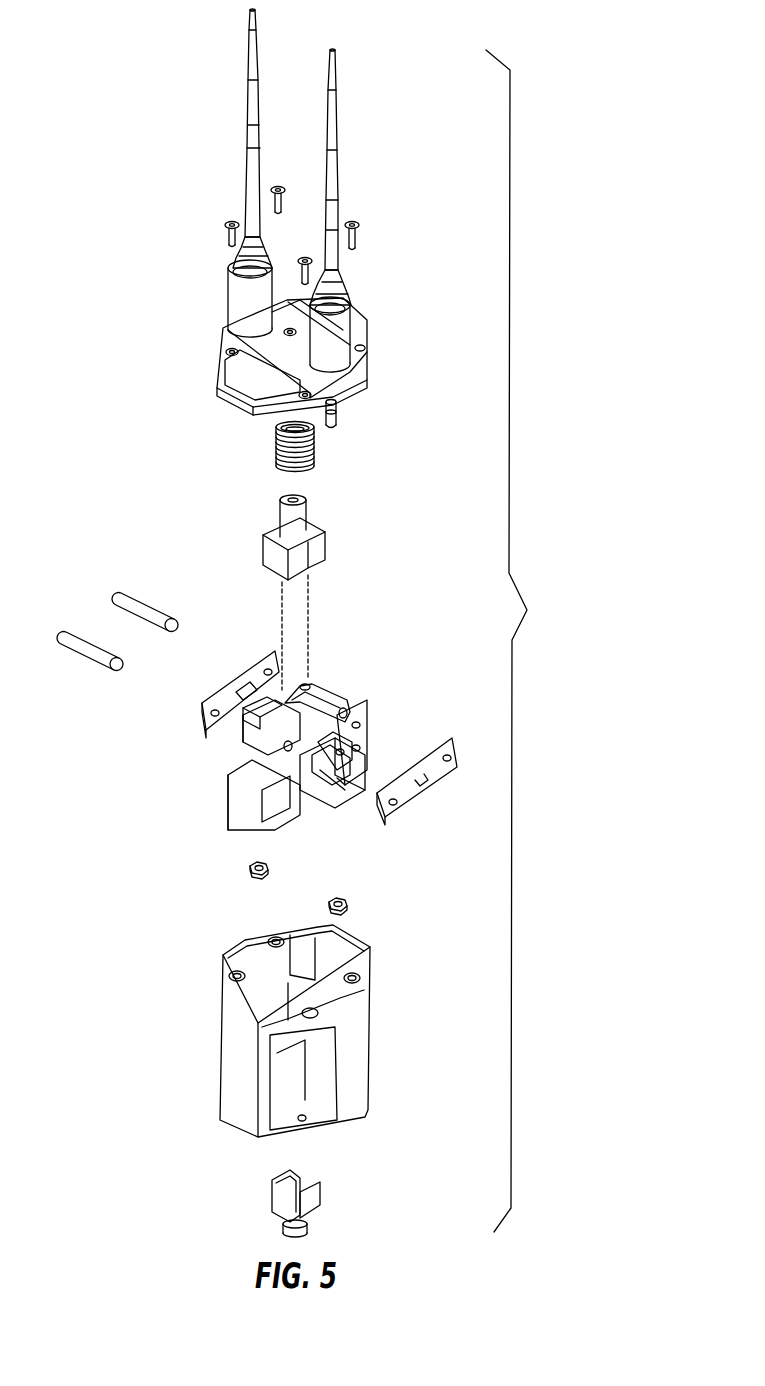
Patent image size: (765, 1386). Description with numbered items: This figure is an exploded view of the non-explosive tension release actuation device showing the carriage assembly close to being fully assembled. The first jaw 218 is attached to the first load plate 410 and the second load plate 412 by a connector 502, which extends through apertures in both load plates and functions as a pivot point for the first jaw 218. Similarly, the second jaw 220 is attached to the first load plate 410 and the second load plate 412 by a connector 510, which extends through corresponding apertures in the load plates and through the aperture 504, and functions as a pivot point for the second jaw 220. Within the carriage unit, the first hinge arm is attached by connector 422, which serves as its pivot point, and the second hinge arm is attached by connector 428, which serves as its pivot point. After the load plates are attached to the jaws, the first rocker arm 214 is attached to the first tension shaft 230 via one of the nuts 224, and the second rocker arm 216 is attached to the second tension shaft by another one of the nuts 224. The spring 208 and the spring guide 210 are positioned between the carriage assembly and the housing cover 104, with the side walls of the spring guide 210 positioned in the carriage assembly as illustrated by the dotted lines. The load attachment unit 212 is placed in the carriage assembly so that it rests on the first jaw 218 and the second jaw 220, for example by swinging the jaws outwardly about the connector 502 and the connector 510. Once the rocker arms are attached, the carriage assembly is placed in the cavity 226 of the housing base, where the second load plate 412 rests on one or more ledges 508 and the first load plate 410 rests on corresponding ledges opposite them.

The housing cover 104 is at (235, 378).
The first tension shaft 230 is at (335, 418).
The spring 208 is at (275, 440).
The spring guide 210 is at (325, 543).
The connector 510 is at (150, 605).
The connector 502 is at (90, 668).
The second load plate 412 is at (268, 652).
The second rocker arm 216 is at (235, 698).
The second jaw 220 is at (312, 683).
The aperture 504 is at (350, 712).
The connector 428 is at (365, 768).
The first load plate 410 is at (452, 740).
The first jaw 218 is at (250, 745).
The first rocker arm 214 is at (365, 800).
The connector 422 is at (328, 795).
The nuts 224 is at (250, 865).
The ledges 508 is at (276, 945).
The cavity 226 is at (340, 1003).
The load attachment unit 212 is at (325, 1195).